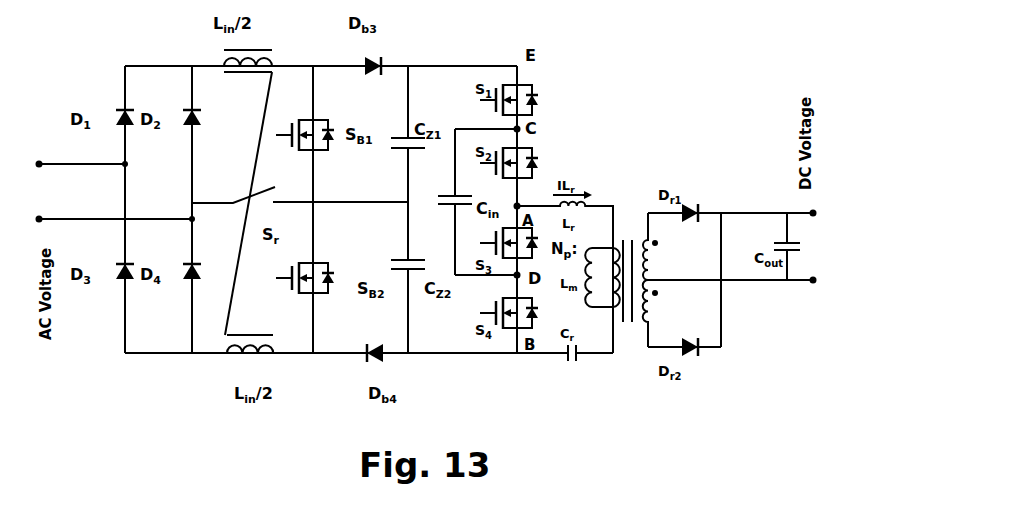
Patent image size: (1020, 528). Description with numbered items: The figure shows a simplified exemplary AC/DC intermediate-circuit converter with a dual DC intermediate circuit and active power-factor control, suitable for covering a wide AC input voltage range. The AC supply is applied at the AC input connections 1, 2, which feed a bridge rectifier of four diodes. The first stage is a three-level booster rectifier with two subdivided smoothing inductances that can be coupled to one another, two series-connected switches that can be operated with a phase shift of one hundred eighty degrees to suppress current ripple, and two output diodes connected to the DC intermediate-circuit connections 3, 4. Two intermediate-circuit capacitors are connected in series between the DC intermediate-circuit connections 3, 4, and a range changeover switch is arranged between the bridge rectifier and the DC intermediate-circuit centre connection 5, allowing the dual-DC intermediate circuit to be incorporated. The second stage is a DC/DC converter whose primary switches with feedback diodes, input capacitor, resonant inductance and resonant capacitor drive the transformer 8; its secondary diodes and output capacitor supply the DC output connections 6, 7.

The AC input connection 1 is at (81, 154).
The AC input connection 2 is at (114, 209).
The DC intermediate-circuit connection 3 is at (417, 51).
The DC intermediate-circuit connection 4 is at (419, 369).
The DC intermediate-circuit centre connection 5 is at (394, 192).
The DC output connection 6 is at (804, 228).
The DC output connection 7 is at (804, 294).
The transformer 8 is at (613, 209).